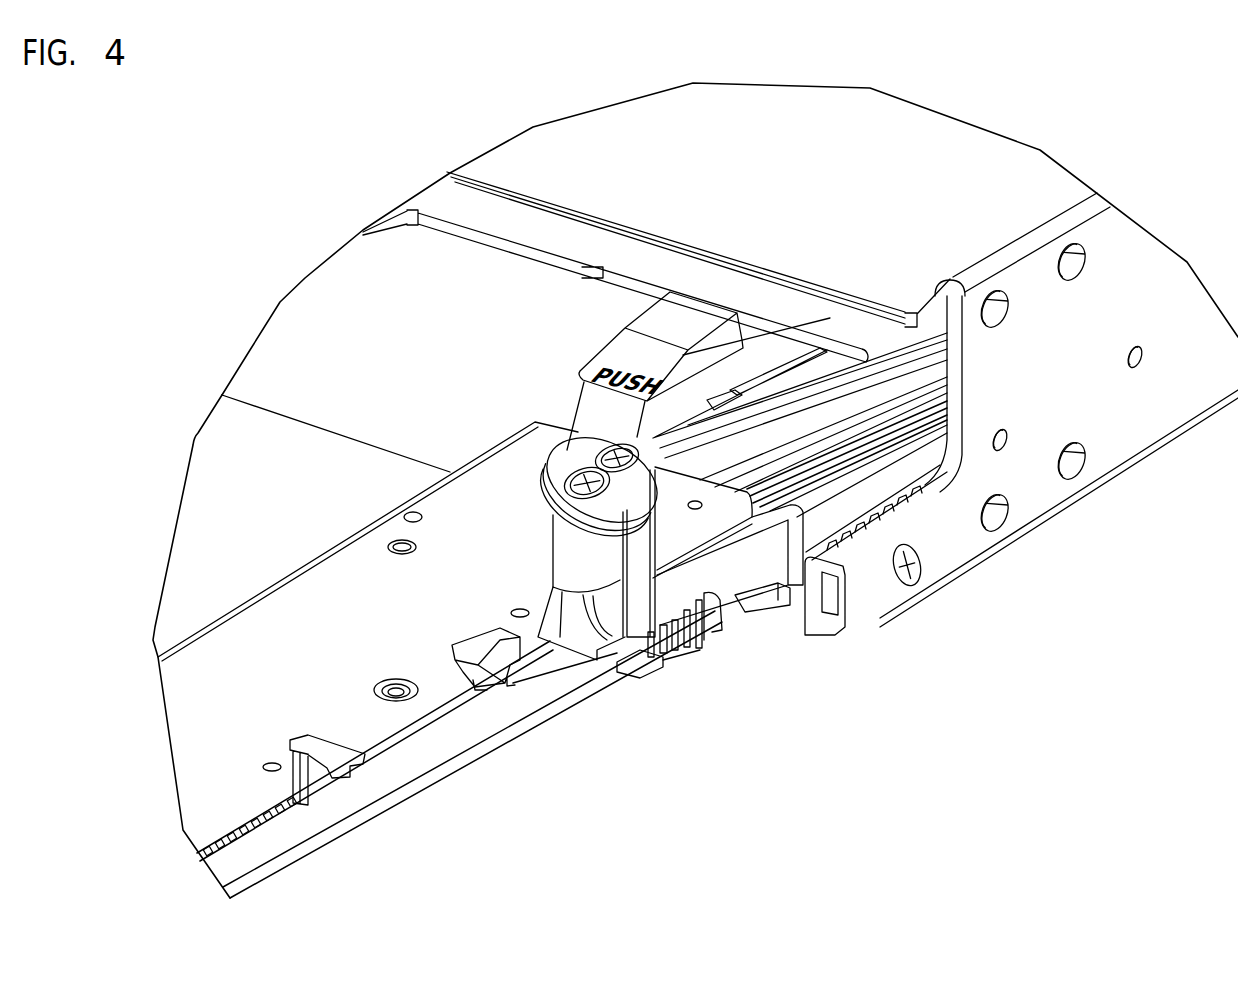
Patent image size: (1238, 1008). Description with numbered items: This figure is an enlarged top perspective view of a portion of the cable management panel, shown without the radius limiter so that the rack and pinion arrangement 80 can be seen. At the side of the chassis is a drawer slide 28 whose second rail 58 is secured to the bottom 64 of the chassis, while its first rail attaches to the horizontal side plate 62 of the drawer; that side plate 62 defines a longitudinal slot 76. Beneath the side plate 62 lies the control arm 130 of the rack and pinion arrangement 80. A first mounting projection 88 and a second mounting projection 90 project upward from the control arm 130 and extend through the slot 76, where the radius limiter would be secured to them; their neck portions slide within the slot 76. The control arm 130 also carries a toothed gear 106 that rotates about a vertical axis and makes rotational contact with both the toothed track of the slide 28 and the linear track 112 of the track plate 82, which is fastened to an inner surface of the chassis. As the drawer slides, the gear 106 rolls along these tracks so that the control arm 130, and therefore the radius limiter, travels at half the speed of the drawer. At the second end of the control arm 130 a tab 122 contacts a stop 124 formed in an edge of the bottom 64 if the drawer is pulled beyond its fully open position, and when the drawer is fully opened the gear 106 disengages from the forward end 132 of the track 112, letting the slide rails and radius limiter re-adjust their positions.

The drawer slide 28 is at (755, 350).
The second rail 58 is at (800, 400).
The bottom 64 is at (870, 400).
The forward end 132 is at (848, 527).
The track plate 82 is at (932, 470).
The linear track 112 is at (880, 510).
The horizontal side plate 62 is at (320, 595).
The control arm 130 is at (573, 700).
The longitudinal slot 76 is at (228, 833).
The first mounting projection 88 is at (317, 742).
The second mounting projection 90 is at (475, 638).
The tab 122 is at (800, 533).
The stop 124 is at (773, 597).
The toothed gear 106 is at (712, 632).
The rack and pinion arrangement 80 is at (698, 690).